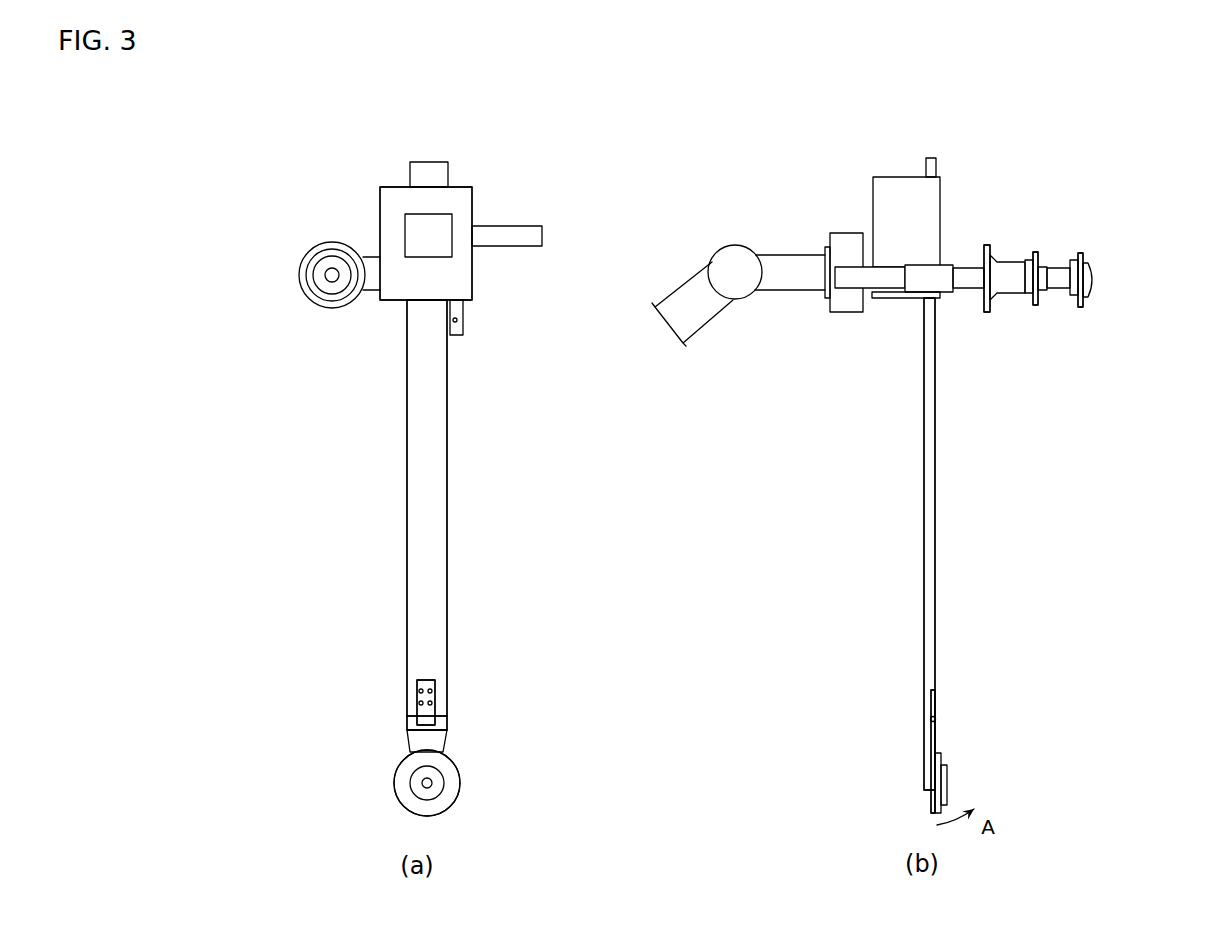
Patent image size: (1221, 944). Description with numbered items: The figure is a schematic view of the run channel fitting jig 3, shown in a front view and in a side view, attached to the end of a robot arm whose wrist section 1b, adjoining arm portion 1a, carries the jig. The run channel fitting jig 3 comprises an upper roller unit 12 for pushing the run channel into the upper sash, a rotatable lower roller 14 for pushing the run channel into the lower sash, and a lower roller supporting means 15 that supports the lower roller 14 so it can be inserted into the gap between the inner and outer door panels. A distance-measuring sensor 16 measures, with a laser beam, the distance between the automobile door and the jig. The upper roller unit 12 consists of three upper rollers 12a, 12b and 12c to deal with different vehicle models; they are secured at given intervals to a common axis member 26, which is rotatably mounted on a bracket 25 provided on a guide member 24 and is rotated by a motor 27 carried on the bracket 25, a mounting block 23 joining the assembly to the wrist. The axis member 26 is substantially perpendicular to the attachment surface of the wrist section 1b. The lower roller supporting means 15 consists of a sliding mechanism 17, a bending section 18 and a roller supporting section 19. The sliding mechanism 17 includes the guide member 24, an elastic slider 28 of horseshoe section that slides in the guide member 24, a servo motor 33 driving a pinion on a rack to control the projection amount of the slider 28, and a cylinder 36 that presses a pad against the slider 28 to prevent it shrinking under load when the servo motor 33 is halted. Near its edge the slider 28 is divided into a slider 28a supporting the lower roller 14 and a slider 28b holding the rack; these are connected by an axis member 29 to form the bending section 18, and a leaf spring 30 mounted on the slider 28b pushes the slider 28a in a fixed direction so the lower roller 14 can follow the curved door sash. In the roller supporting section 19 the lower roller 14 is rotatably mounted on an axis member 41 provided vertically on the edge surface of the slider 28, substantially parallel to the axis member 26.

The run channel fitting jig 3 is at (470, 124).
The robot arm first link 1a is at (678, 297).
The wrist section 1b is at (787, 252).
The upper roller unit 12 is at (298, 243).
The upper roller 12a is at (987, 245).
The upper roller 12b is at (1036, 252).
The upper roller 12c is at (1083, 257).
The lower roller 14 is at (458, 797).
The lower roller supporting means 15 is at (463, 431).
The distance-measuring sensor 16 is at (462, 318).
The sliding mechanism 17 is at (498, 203).
The bending section 18 is at (380, 698).
The roller supporting section 19 is at (481, 771).
The mounting block 23 is at (833, 303).
The guide member 24 is at (395, 189).
The bracket 25 is at (920, 285).
The axis member 26 is at (972, 285).
The motor 27 is at (853, 283).
The slider 28 is at (451, 553).
The slider 28a is at (445, 737).
The slider 28b is at (440, 678).
The axis member 29 is at (930, 719).
The leaf spring 30 is at (436, 705).
The servo motor 33 is at (522, 227).
The cylinder 36 is at (440, 220).
The axis member 41 is at (432, 786).